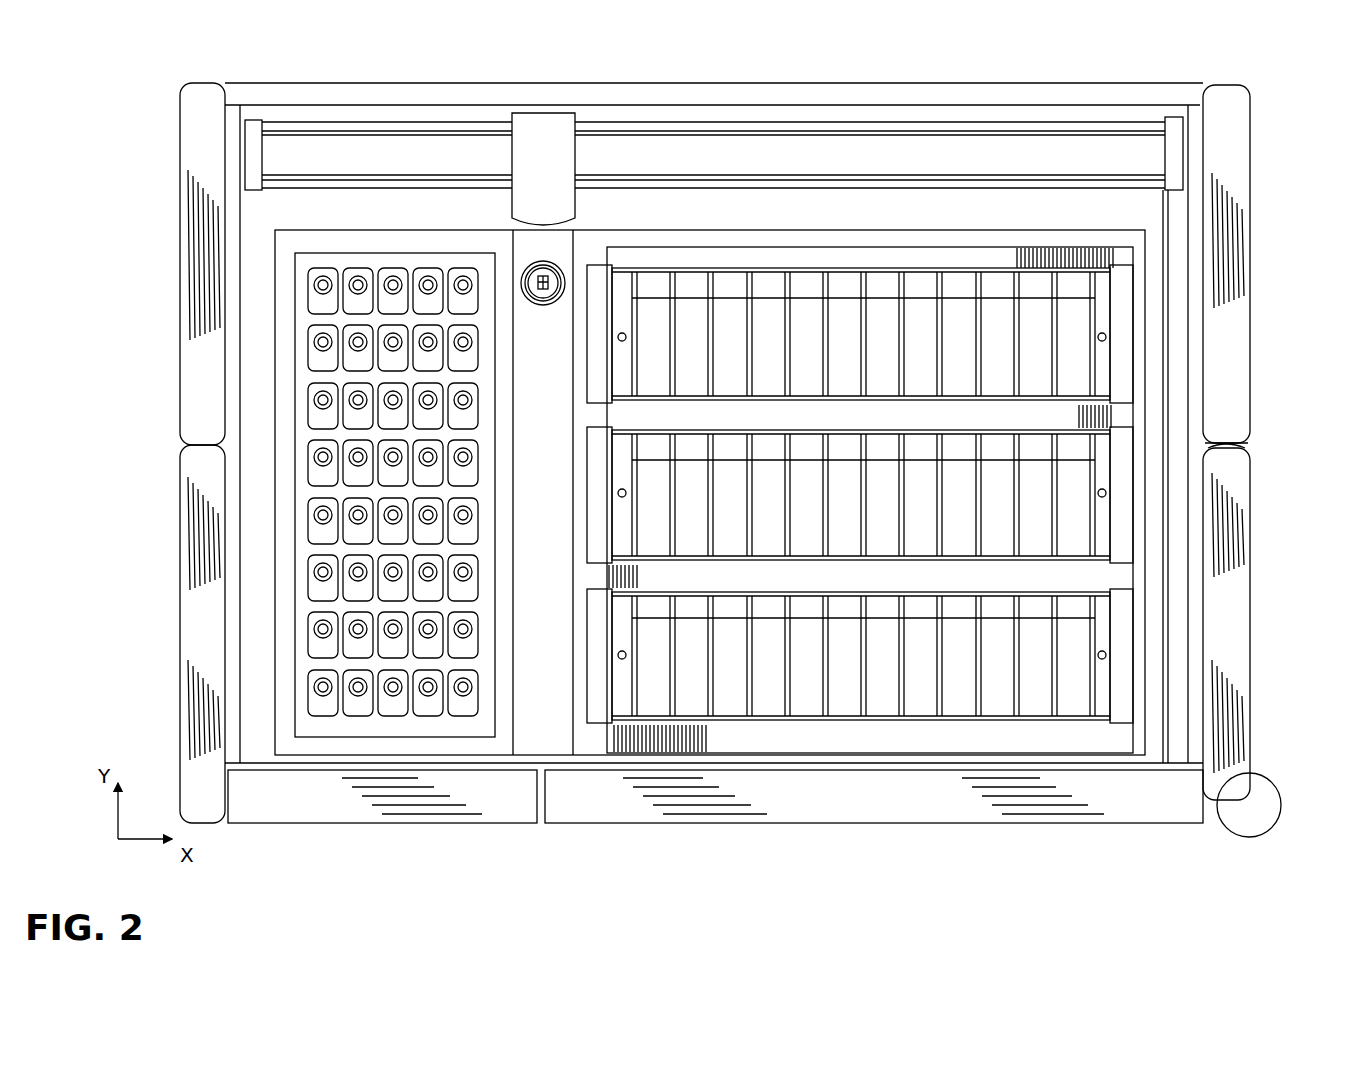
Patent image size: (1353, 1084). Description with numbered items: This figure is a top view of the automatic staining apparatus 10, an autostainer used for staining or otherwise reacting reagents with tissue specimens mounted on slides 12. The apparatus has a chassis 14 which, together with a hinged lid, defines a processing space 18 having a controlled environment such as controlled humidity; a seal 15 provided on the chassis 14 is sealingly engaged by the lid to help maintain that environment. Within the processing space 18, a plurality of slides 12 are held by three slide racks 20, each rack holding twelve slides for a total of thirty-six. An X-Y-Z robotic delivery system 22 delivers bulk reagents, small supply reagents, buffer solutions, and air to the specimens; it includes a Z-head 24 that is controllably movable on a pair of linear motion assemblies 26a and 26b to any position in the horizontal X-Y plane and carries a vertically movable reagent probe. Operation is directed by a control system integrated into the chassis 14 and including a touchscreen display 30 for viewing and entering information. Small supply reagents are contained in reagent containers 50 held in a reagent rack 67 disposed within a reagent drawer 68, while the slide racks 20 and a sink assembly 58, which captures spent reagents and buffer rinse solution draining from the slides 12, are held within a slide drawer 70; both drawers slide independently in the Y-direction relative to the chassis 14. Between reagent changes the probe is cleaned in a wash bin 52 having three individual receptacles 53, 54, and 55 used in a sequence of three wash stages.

The automatic staining apparatus 10 is at (128, 181).
The slides 12 is at (930, 287).
The chassis 14 is at (180, 538).
The seal 15 is at (1182, 510).
The processing space 18 is at (1145, 208).
The slide racks 20 is at (580, 372).
The X-Y-Z robotic delivery system 22 is at (393, 160).
The Z-head 24 is at (584, 165).
The linear motion assembly 26a is at (895, 155).
The linear motion assembly 26b is at (250, 507).
The touchscreen display 30 is at (1250, 620).
The reagent containers 50 is at (304, 633).
The wash bin 52 is at (552, 270).
The receptacle 53 is at (543, 305).
The receptacle 54 is at (530, 272).
The receptacle 55 is at (562, 280).
The sink assembly 58 is at (577, 732).
The reagent rack 67 is at (290, 695).
The reagent drawer 68 is at (408, 830).
The slide drawer 70 is at (938, 830).